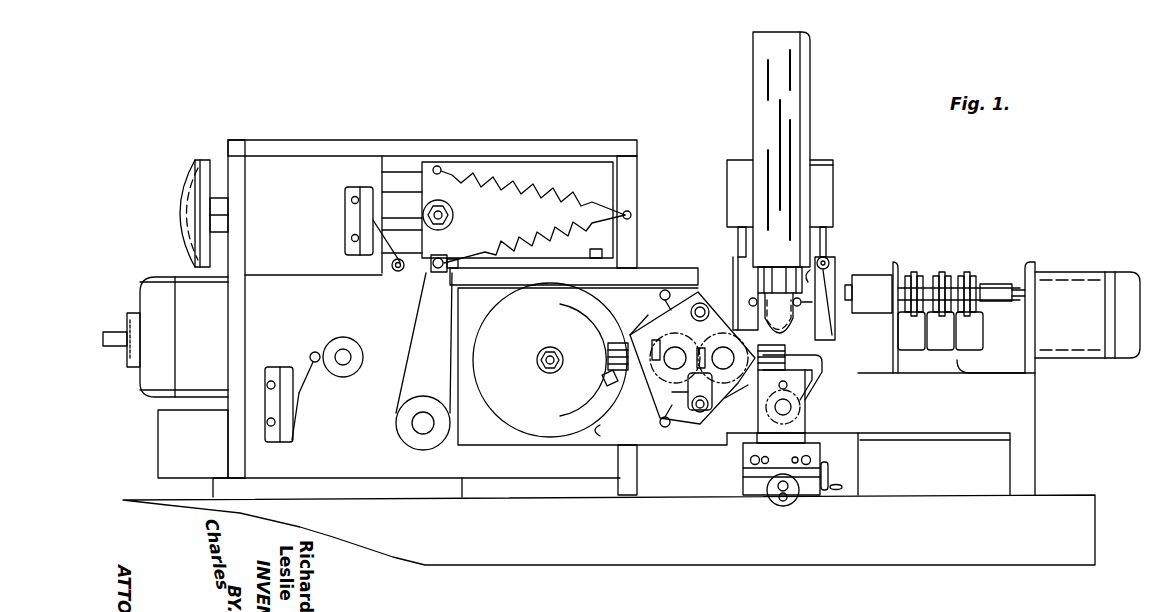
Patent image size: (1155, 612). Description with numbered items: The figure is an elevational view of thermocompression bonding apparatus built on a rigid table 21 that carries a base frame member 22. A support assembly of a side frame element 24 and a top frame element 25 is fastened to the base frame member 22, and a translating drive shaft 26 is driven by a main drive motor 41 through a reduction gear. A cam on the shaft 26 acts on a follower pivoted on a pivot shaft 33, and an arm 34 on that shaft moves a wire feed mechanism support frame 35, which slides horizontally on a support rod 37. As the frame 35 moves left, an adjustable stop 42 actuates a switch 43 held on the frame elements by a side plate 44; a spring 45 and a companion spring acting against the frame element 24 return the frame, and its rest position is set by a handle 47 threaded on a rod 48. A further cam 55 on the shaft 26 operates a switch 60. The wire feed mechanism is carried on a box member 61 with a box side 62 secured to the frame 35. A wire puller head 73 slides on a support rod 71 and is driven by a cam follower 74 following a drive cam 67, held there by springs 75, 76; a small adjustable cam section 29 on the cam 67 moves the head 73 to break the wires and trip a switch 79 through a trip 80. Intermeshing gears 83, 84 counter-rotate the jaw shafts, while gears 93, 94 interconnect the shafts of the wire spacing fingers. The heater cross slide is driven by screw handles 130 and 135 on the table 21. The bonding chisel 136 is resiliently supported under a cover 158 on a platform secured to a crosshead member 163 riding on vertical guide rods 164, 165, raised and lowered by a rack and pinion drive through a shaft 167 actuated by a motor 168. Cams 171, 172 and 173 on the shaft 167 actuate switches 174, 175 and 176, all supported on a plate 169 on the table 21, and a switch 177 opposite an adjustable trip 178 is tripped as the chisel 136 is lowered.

The rigid table 21 is at (631, 531).
The base frame member 22 is at (316, 480).
The side frame element 24 is at (638, 203).
The top frame element 25 is at (362, 142).
The translating drive shaft 26 is at (318, 352).
The adjustable cam section 29 is at (622, 391).
The pivot shaft 33 is at (423, 434).
The arm 34 is at (420, 375).
The wire feed mechanism support frame 35 is at (540, 160).
The support rod 37 is at (400, 178).
The main drive motor 41 is at (208, 331).
The adjustable stop 42 is at (433, 258).
The switch 43 is at (366, 252).
The side plate 44 is at (291, 221).
The spring 45 is at (534, 240).
The handle 47 is at (178, 195).
The rod 48 is at (412, 205).
The cam 55 is at (365, 355).
The switch 60 is at (295, 425).
The box member 61 is at (662, 268).
The box side 62 is at (492, 433).
The motion drive cam 67 is at (610, 432).
The support rod 71 is at (716, 317).
The head 73 is at (647, 324).
The cam follower 74 is at (610, 364).
The spring 75 is at (658, 296).
The spring 76 is at (660, 422).
The switch 79 is at (676, 392).
The trip 80 is at (692, 394).
The gear 83 is at (662, 342).
The gear 84 is at (738, 388).
The gear 93 is at (800, 388).
The gear 94 is at (800, 412).
The screw handle 130 is at (828, 484).
The screw handle 135 is at (777, 503).
The bonding chisel 136 is at (788, 337).
The cover 158 is at (810, 84).
The crosshead member 163 is at (828, 196).
The vertical guide rod 164 is at (743, 160).
The vertical guide rod 165 is at (818, 160).
The shaft 167 is at (1013, 285).
The motor 168 is at (1078, 274).
The plate 169 is at (992, 418).
The cam 171 is at (915, 276).
The cam 172 is at (944, 272).
The cam 173 is at (968, 276).
The switch 174 is at (916, 331).
The switch 175 is at (945, 331).
The switch 176 is at (990, 342).
The switch 177 is at (790, 312).
The adjustable trip 178 is at (828, 232).